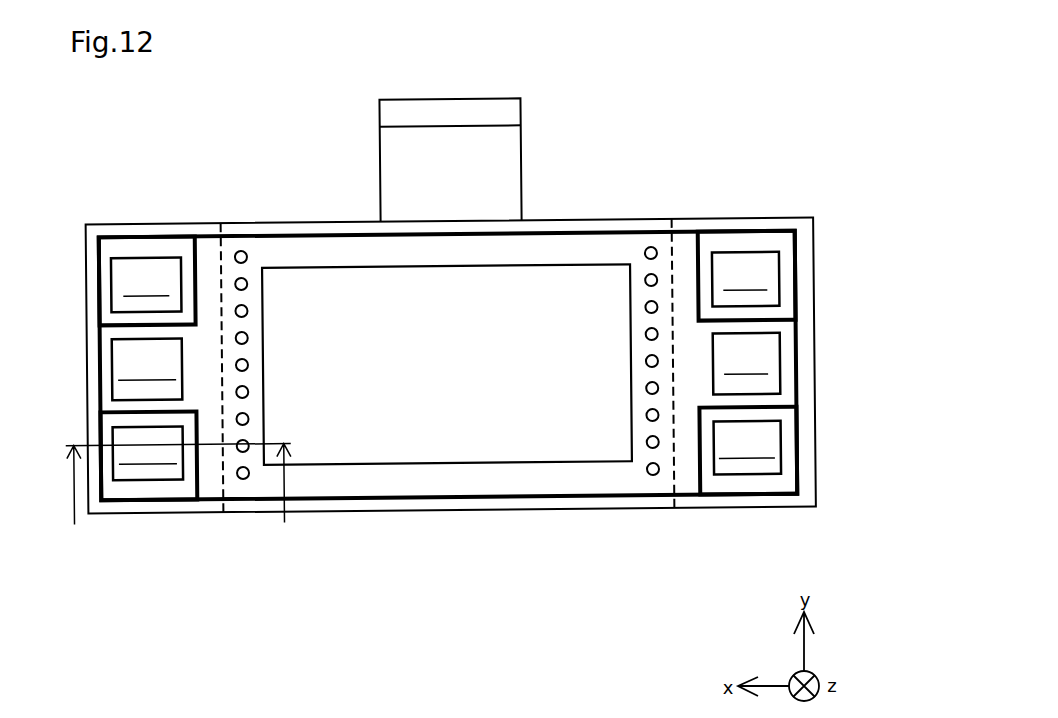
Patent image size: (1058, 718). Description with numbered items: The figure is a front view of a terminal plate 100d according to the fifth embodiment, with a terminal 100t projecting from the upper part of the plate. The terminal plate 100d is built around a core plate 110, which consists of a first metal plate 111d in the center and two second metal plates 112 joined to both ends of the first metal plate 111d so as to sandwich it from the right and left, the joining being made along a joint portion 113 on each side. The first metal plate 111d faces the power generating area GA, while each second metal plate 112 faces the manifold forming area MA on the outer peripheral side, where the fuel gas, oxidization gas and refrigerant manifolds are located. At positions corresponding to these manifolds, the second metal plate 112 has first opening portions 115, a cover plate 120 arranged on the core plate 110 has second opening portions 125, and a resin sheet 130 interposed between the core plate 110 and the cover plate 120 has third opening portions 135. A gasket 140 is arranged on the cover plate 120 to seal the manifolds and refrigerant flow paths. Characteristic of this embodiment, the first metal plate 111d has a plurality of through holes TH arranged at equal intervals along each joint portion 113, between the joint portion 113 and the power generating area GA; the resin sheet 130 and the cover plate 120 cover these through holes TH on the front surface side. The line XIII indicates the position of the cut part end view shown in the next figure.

The terminal plate 100d is at (157, 111).
The terminal 100t is at (523, 127).
The core plate 110 is at (122, 573).
The first metal plate 111d is at (487, 513).
The second metal plate 112 is at (140, 513).
The joint portion 113 is at (210, 241).
The first opening portion 115 is at (112, 264).
The second opening portion 125 is at (65, 200).
The third opening portion 135 is at (68, 200).
The cover plate 120 is at (600, 304).
The resin sheet 130 is at (558, 248).
The gasket 140 is at (287, 234).
The through hole TH is at (246, 274).
The power generating area GA is at (468, 377).
The manifold forming area MA is at (188, 377).
The line XIII- XIII is at (181, 498).